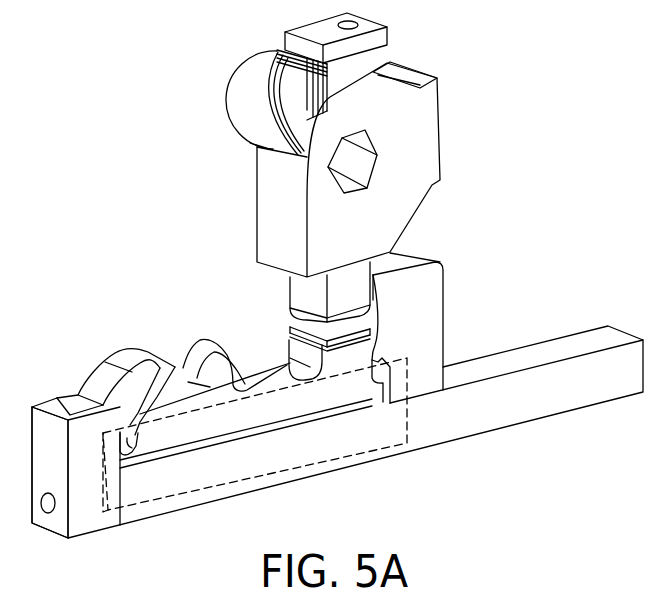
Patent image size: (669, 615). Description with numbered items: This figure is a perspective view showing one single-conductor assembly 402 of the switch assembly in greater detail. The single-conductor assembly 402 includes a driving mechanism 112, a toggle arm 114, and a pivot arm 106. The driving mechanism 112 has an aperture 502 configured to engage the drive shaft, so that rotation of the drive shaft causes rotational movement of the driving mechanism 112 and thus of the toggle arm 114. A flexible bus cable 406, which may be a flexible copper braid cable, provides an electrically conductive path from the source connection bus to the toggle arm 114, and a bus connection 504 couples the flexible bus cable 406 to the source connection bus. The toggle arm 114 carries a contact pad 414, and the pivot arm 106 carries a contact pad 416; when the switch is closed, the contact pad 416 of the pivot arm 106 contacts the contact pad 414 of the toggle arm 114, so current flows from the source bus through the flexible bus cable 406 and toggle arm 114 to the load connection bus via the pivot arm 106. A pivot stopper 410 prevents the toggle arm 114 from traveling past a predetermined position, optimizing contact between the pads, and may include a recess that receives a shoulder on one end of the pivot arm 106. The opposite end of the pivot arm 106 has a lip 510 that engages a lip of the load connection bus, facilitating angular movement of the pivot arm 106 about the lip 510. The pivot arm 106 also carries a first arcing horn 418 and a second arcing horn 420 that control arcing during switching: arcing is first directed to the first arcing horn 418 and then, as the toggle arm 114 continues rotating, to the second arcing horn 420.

The single-conductor assembly 402 is at (112, 117).
The flexible bus cable 406 is at (245, 85).
The bus connection 504 is at (387, 30).
The driving mechanism 112 is at (420, 108).
The aperture 502 is at (358, 165).
The toggle arm 114 is at (360, 268).
The contact pad 414 is at (375, 303).
The pivot stopper 410 is at (430, 303).
The first arcing horn 418 is at (201, 337).
The second arcing horn 420 is at (143, 347).
The contact pad 416 is at (293, 330).
The pivot arm 106 is at (248, 425).
The lip 510 is at (135, 450).